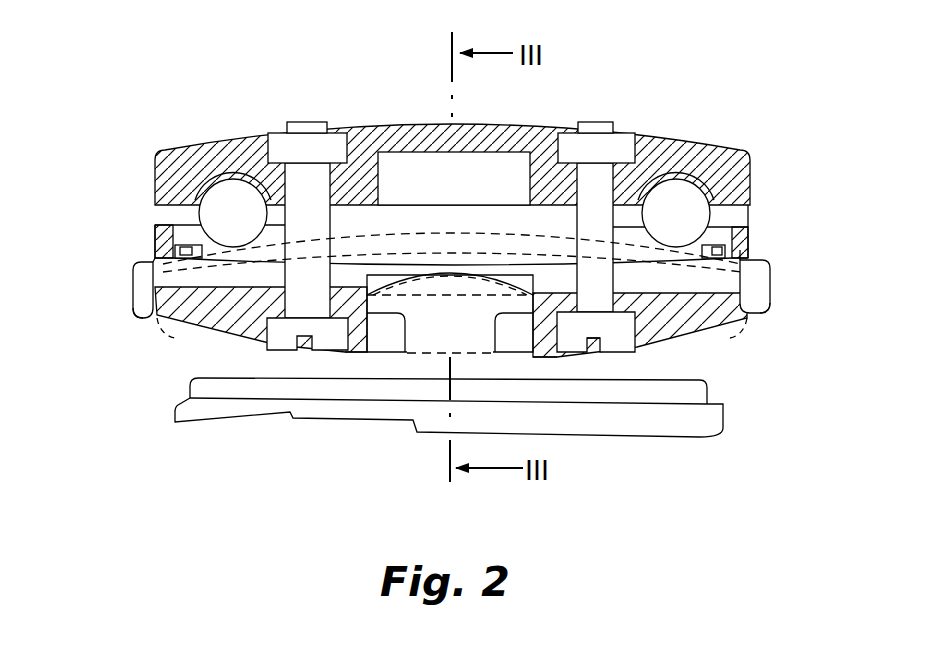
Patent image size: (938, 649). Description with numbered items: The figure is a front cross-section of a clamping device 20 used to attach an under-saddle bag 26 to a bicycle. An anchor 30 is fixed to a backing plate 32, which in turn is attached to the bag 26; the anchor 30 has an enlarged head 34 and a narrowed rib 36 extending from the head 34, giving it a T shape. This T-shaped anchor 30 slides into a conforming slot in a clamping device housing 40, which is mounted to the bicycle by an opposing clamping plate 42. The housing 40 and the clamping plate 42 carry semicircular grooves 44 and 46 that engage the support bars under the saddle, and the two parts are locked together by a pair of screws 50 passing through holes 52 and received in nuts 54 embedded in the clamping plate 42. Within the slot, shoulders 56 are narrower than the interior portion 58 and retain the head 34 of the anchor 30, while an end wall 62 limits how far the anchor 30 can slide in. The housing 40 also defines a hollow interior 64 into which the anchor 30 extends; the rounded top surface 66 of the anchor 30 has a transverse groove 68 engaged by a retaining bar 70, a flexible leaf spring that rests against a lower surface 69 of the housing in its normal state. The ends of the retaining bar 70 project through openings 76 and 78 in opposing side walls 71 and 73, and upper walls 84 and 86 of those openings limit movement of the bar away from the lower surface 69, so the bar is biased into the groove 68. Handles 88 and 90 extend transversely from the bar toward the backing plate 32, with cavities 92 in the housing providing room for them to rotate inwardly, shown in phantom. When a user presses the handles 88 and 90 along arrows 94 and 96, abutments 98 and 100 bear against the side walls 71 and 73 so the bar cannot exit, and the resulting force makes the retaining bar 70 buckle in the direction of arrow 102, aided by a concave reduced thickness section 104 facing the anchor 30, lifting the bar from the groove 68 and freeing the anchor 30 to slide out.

The clamping device 20 is at (277, 62).
The under-saddle bag 26 is at (643, 420).
The anchor 30 is at (444, 345).
The backing plate 32 is at (663, 390).
The enlarged head 34 is at (384, 360).
The narrowed rib 36 is at (407, 353).
The clamping device housing 40 is at (232, 320).
The clamping plate 42 is at (166, 170).
The semicircular groove 44 is at (226, 237).
The semicircular groove 46 is at (236, 176).
The screws 50 is at (262, 140).
The holes 52 is at (362, 168).
The nuts 54 is at (283, 140).
The shoulders 56 is at (398, 355).
The interior portion of the slot 58 is at (371, 310).
The end wall 62 is at (519, 288).
The hollow interior 64 is at (481, 230).
The top surface of the anchor 66 is at (412, 273).
The groove 68 is at (430, 292).
The lower surface of the housing 69 is at (228, 296).
The retaining bar 70 is at (342, 292).
The side wall 71 is at (190, 246).
The side wall 73 is at (756, 258).
The opening 76 is at (160, 257).
The opening 78 is at (780, 270).
The upper wall 84 is at (145, 264).
The upper wall 86 is at (790, 262).
The handle 88 is at (133, 292).
The handle 90 is at (770, 293).
The cavities 92 is at (150, 328).
The arrow 94 is at (128, 277).
The arrow 96 is at (775, 278).
The abutment 98 is at (158, 328).
The abutment 100 is at (740, 328).
The arrow 102 is at (452, 232).
The reduced thickness section 104 is at (565, 358).